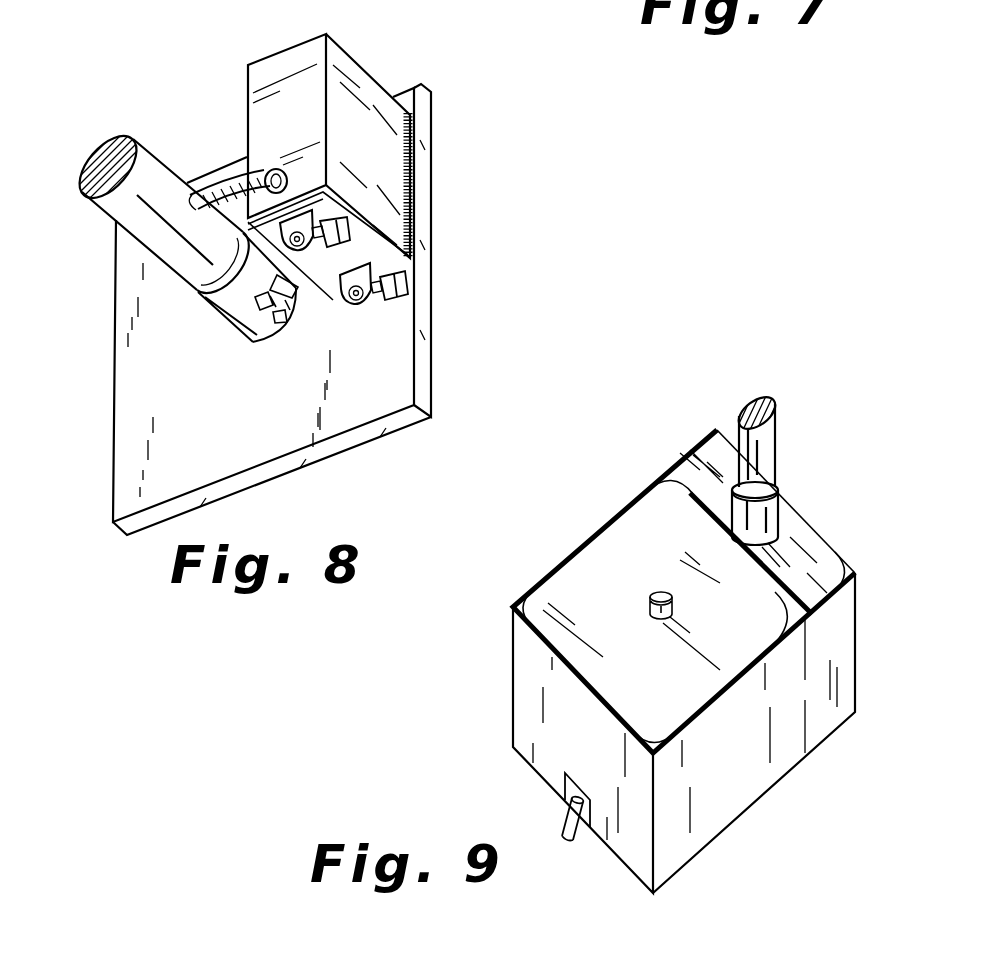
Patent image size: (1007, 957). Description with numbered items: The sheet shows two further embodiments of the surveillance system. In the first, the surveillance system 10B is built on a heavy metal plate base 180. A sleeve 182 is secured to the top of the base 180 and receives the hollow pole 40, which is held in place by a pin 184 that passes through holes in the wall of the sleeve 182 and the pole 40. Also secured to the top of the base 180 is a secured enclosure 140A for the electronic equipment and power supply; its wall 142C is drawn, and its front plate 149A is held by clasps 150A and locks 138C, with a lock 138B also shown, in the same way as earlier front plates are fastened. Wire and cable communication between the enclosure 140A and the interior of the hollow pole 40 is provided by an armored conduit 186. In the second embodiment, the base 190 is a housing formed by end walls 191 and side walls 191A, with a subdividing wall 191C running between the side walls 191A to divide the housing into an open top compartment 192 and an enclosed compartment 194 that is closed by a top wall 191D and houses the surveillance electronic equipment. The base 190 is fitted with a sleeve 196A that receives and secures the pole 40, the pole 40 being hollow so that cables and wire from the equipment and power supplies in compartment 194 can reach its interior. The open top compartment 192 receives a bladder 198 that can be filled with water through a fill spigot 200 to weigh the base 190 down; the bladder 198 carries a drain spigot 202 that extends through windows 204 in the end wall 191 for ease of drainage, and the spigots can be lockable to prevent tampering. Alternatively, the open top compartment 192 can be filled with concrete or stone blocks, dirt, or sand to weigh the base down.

In FIG. 8, the surveillance system 10B is at (384, 203).
In FIG. 8, the hollow pole 40 is at (110, 152).
In FIG. 9, the hollow pole 40 is at (777, 444).
In FIG. 8, the lock 138B is at (306, 303).
In FIG. 8, the locks 138C is at (398, 298).
In FIG. 8, the secured enclosure 140A is at (392, 154).
In FIG. 8, the housing wall 142C is at (252, 91).
In FIG. 8, the front plate 149A is at (383, 260).
In FIG. 8, the clasps 150A is at (300, 252).
In FIG. 8, the heavy metal plate base 180 is at (190, 401).
In FIG. 8, the sleeve 182 is at (222, 312).
In FIG. 8, the pin 184 is at (283, 326).
In FIG. 8, the armored conduit 186 is at (224, 185).
In FIG. 9, the base 190 is at (684, 642).
In FIG. 9, the end walls 191 is at (517, 675).
In FIG. 9, the side walls 191A is at (748, 785).
In FIG. 9, the subdividing wall 191C is at (661, 481).
In FIG. 9, the top wall 191D is at (817, 547).
In FIG. 9, the open top compartment 192 is at (527, 602).
In FIG. 9, the enclosed compartment 194 is at (843, 570).
In FIG. 9, the sleeve 196A is at (778, 515).
In FIG. 9, the bladder 198 is at (678, 688).
In FIG. 9, the fill spigot 200 is at (650, 606).
In FIG. 9, the drain spigot 202 is at (570, 841).
In FIG. 9, the windows 204 is at (569, 798).